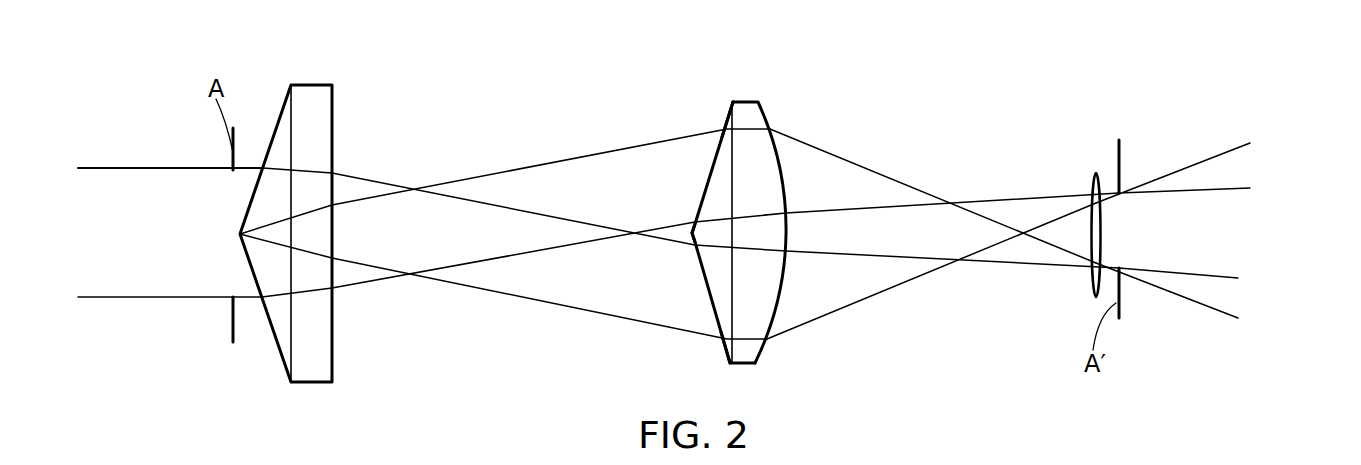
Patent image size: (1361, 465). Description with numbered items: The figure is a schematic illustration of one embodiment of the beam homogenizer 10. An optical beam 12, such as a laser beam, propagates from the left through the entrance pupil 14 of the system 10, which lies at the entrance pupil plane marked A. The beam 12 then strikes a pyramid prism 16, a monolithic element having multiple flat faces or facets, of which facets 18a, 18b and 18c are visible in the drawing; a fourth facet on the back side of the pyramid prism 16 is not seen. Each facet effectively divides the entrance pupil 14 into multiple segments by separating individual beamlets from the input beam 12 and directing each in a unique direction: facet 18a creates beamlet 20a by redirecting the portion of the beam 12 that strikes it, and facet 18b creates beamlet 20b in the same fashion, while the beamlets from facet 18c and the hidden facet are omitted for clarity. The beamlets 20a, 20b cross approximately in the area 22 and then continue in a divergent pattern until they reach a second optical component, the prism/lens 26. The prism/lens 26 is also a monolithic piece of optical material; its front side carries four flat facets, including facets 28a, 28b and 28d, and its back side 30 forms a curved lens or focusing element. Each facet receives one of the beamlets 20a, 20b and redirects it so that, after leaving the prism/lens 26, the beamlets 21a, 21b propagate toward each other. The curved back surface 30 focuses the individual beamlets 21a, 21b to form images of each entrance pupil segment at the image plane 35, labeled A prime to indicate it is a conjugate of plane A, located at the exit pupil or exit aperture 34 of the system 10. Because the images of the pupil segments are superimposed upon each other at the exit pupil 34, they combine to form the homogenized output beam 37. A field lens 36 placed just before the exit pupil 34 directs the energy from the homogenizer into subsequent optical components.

The beam homogenizer 10 is at (862, 116).
The optical beam 12 is at (178, 168).
The entrance pupil 14 is at (219, 208).
The pyramid prism 16 is at (312, 382).
The facet 18a is at (240, 217).
The facet 18b is at (242, 268).
The facet 18c is at (260, 255).
The beamlet 20a is at (367, 178).
The beamlet 20b is at (617, 150).
The beamlet 21a is at (875, 298).
The beamlet 21b is at (878, 170).
The crossing area 22 is at (530, 160).
The prism/lens 26 is at (742, 365).
The facet 28a is at (723, 347).
The facet 28b is at (728, 120).
The facet 28d is at (715, 232).
The curved back surface 30 is at (773, 120).
The exit pupil 34 is at (1124, 222).
The image plane 35 is at (1120, 251).
The field lens 36 is at (1093, 187).
The homogenized output beam 37 is at (1270, 140).